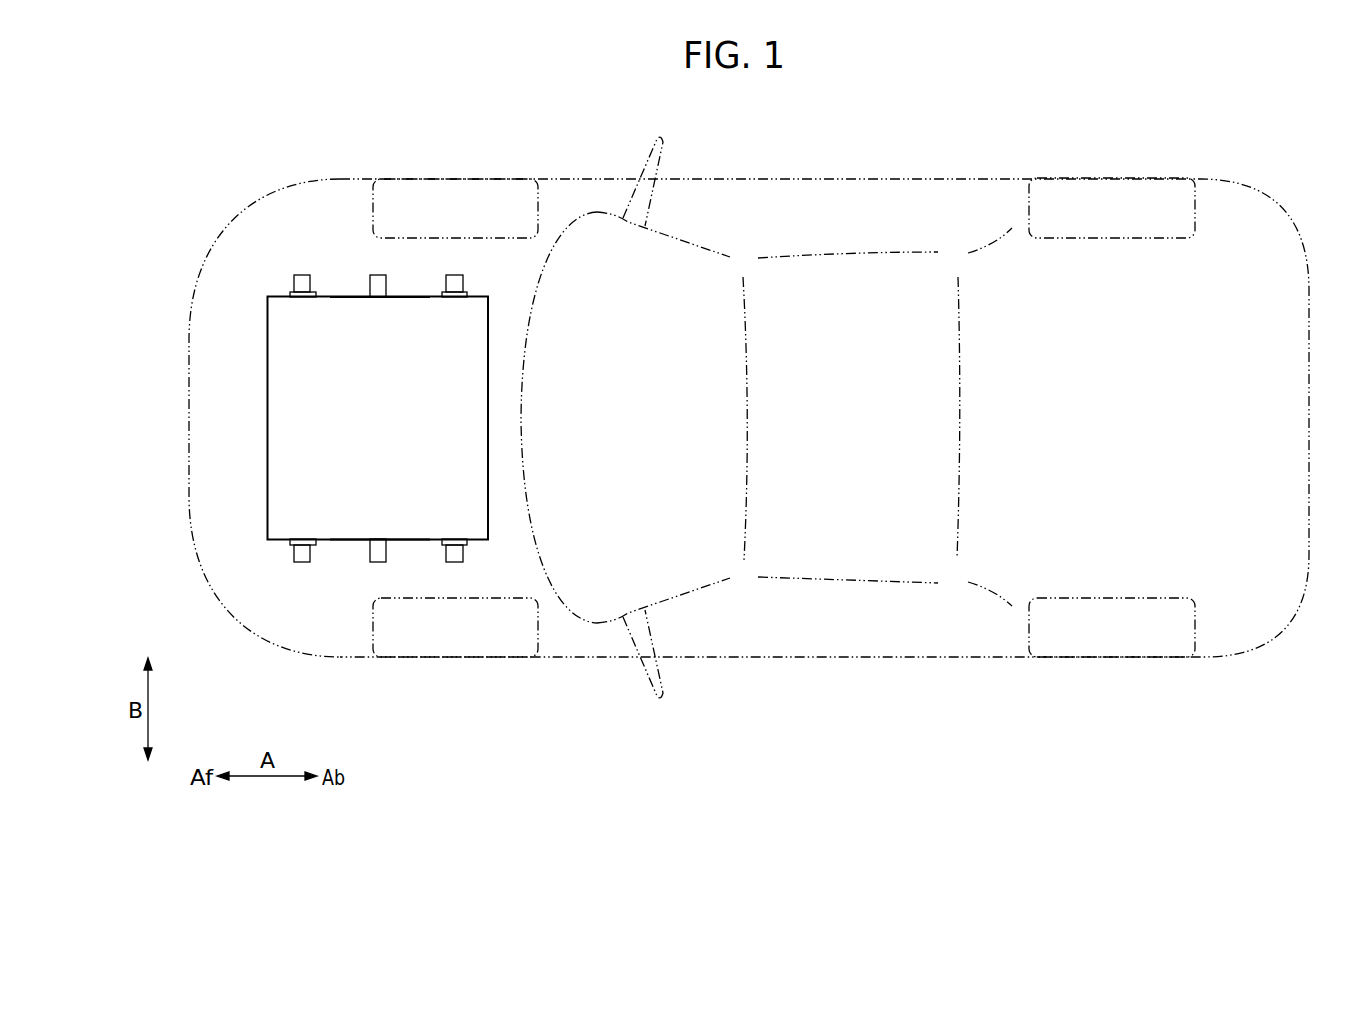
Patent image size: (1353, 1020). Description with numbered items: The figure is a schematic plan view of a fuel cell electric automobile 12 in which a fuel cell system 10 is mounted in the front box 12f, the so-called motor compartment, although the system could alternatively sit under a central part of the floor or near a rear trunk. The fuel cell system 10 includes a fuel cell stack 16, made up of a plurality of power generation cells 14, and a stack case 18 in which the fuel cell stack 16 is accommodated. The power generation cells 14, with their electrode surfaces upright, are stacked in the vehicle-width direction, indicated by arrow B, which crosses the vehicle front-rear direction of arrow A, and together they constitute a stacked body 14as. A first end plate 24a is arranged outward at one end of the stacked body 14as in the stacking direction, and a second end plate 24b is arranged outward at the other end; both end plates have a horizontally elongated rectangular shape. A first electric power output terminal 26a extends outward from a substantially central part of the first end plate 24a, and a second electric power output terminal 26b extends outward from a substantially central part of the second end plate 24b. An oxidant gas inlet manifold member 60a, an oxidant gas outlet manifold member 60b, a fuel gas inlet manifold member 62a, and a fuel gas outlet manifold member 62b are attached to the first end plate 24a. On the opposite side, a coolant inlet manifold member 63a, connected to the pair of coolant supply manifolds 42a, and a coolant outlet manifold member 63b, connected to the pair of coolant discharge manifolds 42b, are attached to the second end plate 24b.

The fuel cell system 10 is at (160, 160).
The fuel cell electric automobile 12 is at (749, 400).
The front box 12f is at (281, 213).
The power generation cell 14 is at (455, 388).
The stacked body 14as is at (462, 418).
The fuel cell stack 16 is at (444, 446).
The stack case 18 is at (480, 427).
The first end plate 24a is at (413, 540).
The second end plate 24b is at (413, 297).
The first electric power output terminal 26a is at (380, 560).
The second electric power output terminal 26b is at (380, 283).
The coolant supply manifold 42a is at (455, 285).
The coolant discharge manifold 42b is at (303, 285).
The oxidant gas inlet manifold member 60a is at (487, 568).
The oxidant gas outlet manifold member 60b is at (307, 558).
The fuel gas inlet manifold member 62a is at (457, 557).
The fuel gas outlet manifold member 62b is at (302, 571).
The coolant inlet manifold member 63a is at (487, 268).
The coolant outlet manifold member 63b is at (274, 268).